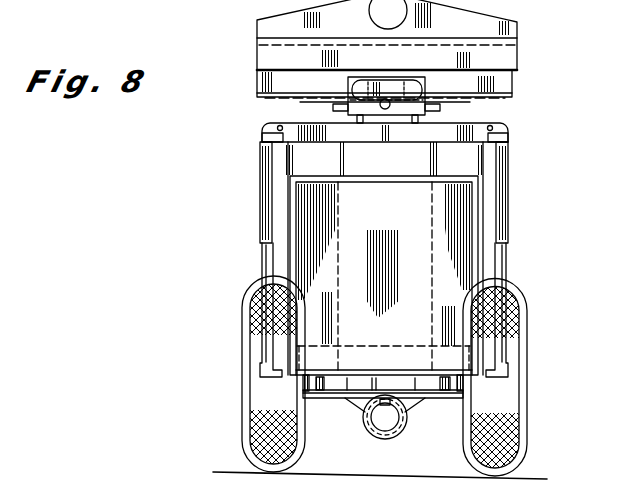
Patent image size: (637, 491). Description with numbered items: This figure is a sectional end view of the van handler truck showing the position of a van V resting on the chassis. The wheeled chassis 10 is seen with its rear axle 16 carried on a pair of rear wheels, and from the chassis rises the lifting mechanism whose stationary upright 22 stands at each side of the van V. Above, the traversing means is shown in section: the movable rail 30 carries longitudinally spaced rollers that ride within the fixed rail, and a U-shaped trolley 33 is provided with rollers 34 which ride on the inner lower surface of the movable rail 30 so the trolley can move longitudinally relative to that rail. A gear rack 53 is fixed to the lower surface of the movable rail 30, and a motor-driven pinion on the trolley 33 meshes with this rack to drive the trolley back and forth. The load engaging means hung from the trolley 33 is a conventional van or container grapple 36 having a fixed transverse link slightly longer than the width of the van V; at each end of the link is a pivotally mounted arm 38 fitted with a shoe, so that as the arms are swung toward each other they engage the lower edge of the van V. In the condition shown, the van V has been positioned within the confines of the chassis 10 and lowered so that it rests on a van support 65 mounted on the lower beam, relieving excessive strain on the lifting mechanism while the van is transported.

The wheeled chassis 10 is at (364, 435).
The rear axle 16 is at (316, 396).
The stationary upright 22 is at (436, 163).
The movable rail 30 is at (510, 87).
The U-shaped trolley 33 is at (424, 94).
The rollers 34 is at (366, 79).
The van or container grapple 36 is at (258, 253).
The pivotally mounted arm 38 is at (260, 178).
The gear rack 53 is at (470, 103).
The van support 65 is at (433, 398).
The van V is at (470, 256).